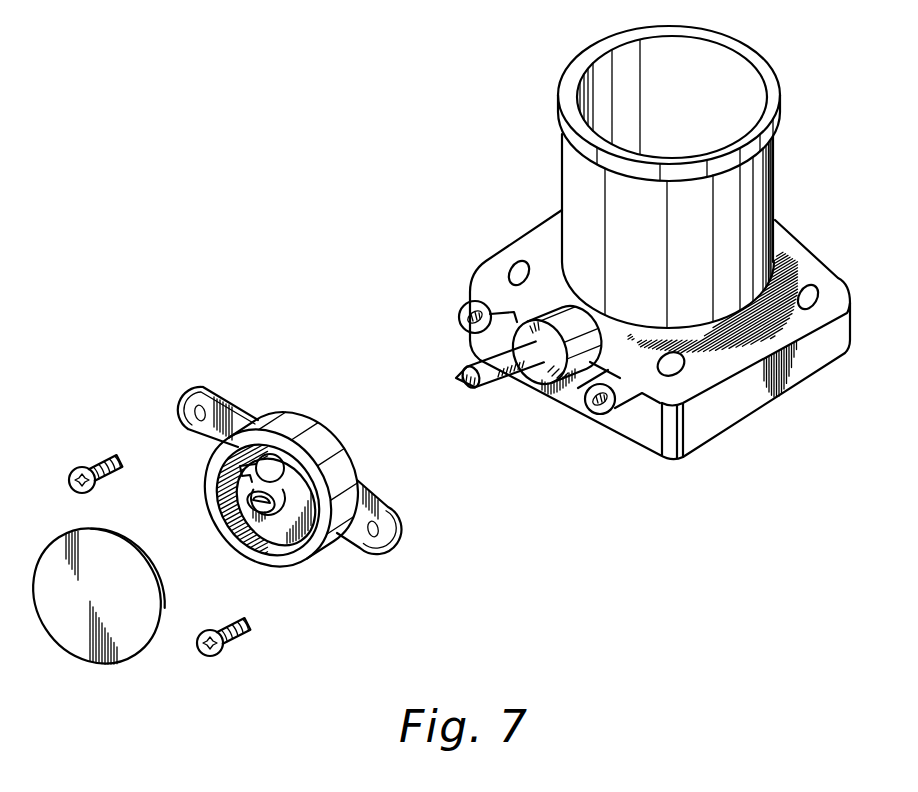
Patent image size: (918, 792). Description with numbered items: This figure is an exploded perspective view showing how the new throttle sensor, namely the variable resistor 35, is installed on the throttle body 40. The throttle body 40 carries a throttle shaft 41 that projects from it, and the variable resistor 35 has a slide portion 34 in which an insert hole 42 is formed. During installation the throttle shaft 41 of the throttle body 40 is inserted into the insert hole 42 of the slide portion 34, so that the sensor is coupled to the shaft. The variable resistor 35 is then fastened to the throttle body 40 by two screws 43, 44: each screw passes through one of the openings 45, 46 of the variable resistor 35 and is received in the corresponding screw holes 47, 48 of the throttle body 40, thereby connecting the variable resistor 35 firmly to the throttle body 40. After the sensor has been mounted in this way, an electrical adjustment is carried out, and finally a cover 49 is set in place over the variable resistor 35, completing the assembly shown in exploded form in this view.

The slide portion 34 is at (270, 463).
The variable resistor 35 is at (335, 545).
The throttle body 40 is at (592, 165).
The throttle shaft 41 is at (493, 381).
The insert hole 42 is at (263, 508).
The screw 43 is at (81, 470).
The screw 44 is at (218, 655).
The opening 45 is at (200, 404).
The opening 46 is at (380, 533).
The screw hole 47 is at (458, 313).
The screw hole 48 is at (592, 412).
The cover 49 is at (103, 573).